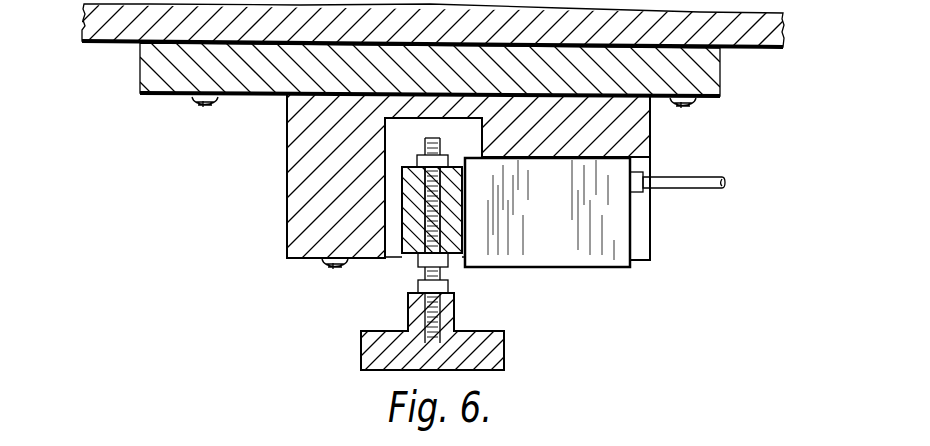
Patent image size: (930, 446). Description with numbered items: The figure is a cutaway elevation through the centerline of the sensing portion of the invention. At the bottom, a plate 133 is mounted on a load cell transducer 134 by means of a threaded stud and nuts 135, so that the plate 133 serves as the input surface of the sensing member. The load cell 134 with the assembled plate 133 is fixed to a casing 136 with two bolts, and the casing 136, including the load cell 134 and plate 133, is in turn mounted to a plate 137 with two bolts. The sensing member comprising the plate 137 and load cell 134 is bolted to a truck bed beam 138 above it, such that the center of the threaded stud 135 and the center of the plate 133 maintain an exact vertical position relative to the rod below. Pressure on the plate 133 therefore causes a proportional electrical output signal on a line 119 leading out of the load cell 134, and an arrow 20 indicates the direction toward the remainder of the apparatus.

The direction arrow 20 is at (698, 212).
The line 119 is at (690, 177).
The plate 133 is at (505, 348).
The load cell transducer 134 is at (555, 267).
The threaded stud and nuts 135 is at (403, 277).
The casing 136 is at (298, 150).
The plate 137 is at (172, 96).
The truck bed beam 138 is at (118, 40).